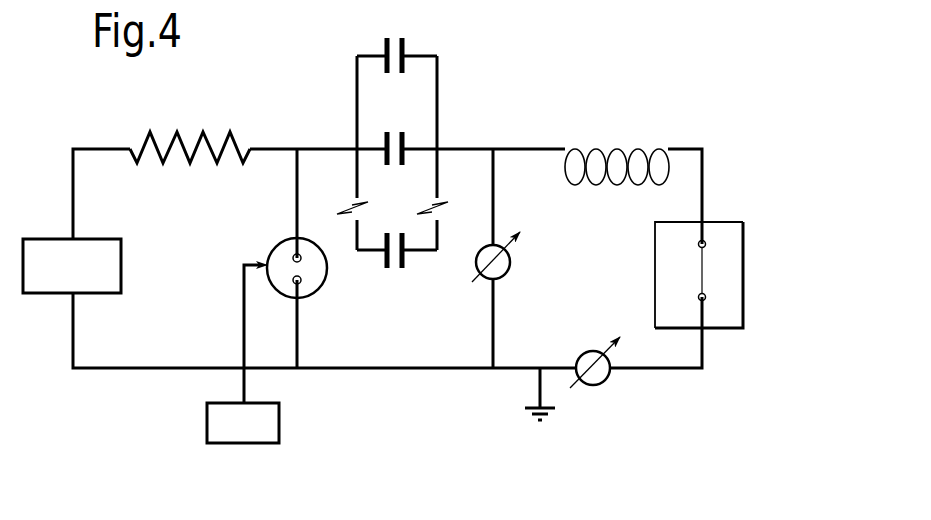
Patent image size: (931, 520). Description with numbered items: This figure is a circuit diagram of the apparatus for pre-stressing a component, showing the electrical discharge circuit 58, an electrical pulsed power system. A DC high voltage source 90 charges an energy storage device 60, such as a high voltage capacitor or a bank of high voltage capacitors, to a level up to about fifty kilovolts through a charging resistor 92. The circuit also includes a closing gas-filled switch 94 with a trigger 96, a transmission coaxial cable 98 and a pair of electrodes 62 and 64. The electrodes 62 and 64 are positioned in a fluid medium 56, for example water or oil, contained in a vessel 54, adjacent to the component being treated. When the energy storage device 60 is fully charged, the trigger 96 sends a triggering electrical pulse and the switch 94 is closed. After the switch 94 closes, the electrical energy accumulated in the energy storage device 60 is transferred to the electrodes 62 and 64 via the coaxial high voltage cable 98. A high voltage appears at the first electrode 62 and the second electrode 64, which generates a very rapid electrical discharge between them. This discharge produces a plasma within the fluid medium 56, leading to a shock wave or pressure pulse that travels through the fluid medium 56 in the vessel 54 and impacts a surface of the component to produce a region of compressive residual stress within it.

The DC high voltage source 90 is at (85, 279).
The charging resistor 92 is at (197, 135).
The closing gas-filled switch 94 is at (323, 290).
The trigger 96 is at (257, 436).
The electrical discharge circuit 58 is at (350, 115).
The energy storage device 60 is at (447, 82).
The transmission coaxial cable 98 is at (647, 145).
The vessel 54 is at (655, 262).
The fluid medium 56 is at (670, 289).
The first electrode 62 is at (706, 243).
The second electrode 64 is at (706, 298).